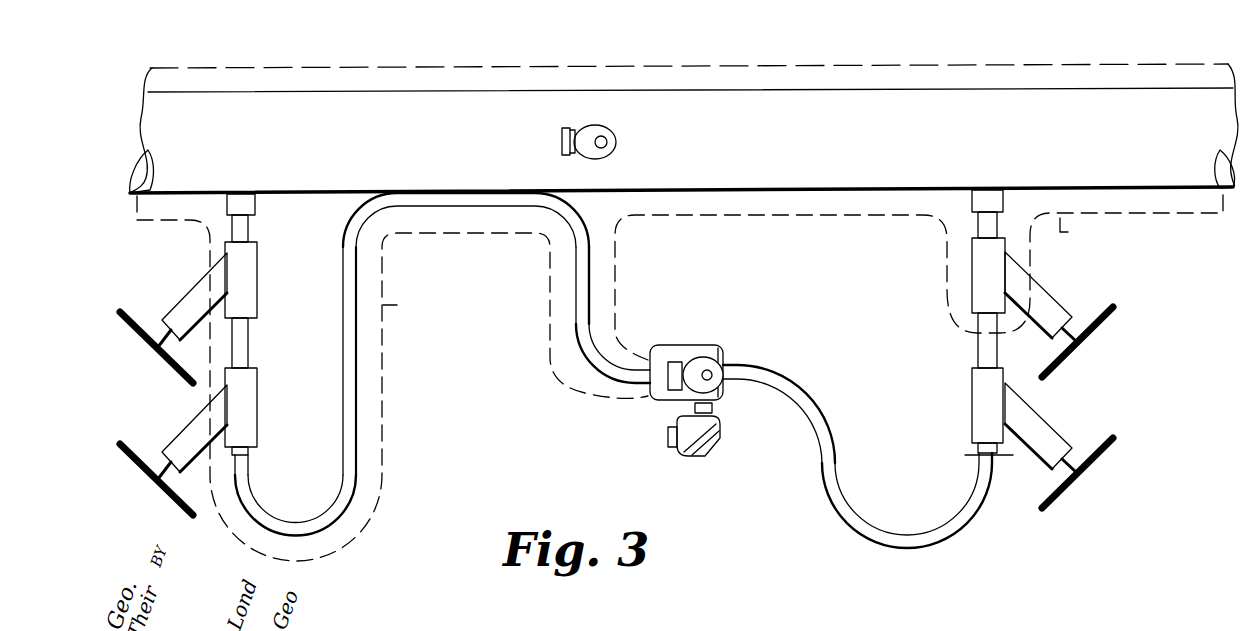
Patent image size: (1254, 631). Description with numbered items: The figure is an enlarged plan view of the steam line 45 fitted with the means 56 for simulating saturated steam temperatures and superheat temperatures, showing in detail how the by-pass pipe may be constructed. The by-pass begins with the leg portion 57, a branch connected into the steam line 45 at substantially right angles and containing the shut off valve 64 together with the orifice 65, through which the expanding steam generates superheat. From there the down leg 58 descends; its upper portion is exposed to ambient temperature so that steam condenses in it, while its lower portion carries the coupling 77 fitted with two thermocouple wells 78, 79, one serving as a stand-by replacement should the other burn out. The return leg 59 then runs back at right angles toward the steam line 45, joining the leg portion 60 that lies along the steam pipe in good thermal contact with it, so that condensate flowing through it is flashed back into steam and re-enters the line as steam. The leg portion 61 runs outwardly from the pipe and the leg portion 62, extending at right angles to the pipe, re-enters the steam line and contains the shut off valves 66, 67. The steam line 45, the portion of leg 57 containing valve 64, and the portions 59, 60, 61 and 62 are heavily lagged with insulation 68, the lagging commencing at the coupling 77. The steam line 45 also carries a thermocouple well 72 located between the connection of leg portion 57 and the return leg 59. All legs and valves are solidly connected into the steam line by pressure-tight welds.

The steam line 45 is at (1125, 135).
The thermocouple well 72 is at (615, 129).
The leg portion 60 is at (473, 193).
The leg portion 61 is at (350, 380).
The return leg 59 is at (586, 291).
The leg portion 62 is at (241, 342).
The shut off valve 66 is at (187, 290).
The shut off valve 67 is at (180, 423).
The insulation 68 is at (383, 428).
The means for simulating saturated and superheat temperatures 56 is at (888, 357).
The coupling 77 is at (712, 335).
The thermocouple well 78 is at (710, 373).
The thermocouple well 79 is at (672, 437).
The down leg 58 is at (942, 536).
The leg portion 57 is at (987, 350).
The shut off valve 64 is at (1087, 293).
The orifice 65 is at (1088, 425).